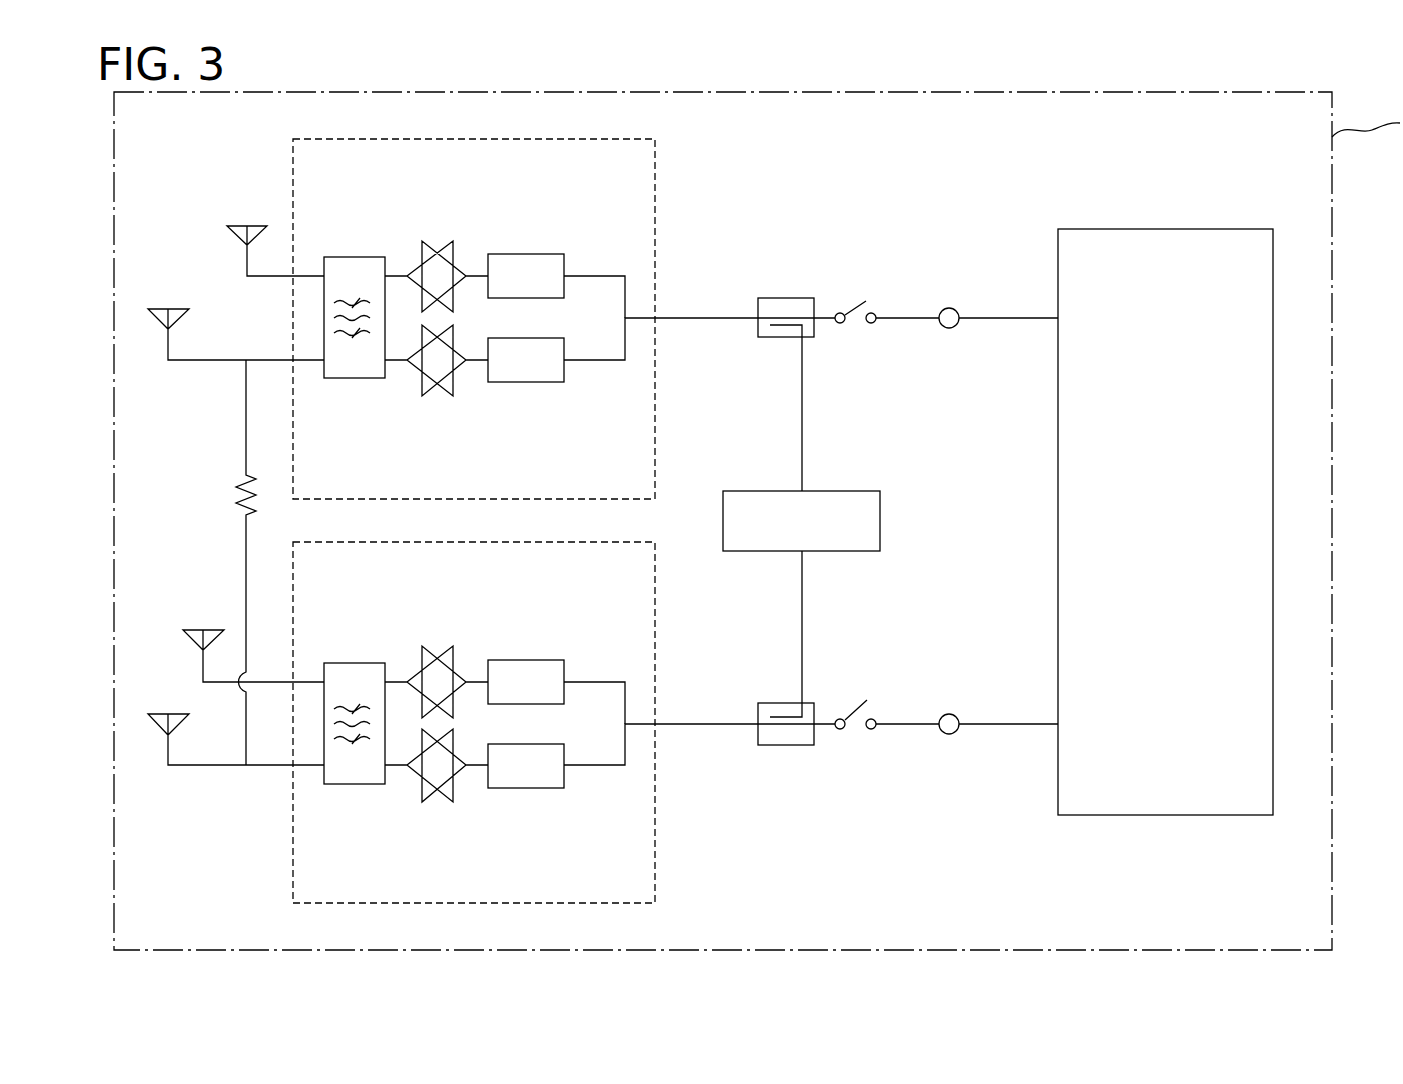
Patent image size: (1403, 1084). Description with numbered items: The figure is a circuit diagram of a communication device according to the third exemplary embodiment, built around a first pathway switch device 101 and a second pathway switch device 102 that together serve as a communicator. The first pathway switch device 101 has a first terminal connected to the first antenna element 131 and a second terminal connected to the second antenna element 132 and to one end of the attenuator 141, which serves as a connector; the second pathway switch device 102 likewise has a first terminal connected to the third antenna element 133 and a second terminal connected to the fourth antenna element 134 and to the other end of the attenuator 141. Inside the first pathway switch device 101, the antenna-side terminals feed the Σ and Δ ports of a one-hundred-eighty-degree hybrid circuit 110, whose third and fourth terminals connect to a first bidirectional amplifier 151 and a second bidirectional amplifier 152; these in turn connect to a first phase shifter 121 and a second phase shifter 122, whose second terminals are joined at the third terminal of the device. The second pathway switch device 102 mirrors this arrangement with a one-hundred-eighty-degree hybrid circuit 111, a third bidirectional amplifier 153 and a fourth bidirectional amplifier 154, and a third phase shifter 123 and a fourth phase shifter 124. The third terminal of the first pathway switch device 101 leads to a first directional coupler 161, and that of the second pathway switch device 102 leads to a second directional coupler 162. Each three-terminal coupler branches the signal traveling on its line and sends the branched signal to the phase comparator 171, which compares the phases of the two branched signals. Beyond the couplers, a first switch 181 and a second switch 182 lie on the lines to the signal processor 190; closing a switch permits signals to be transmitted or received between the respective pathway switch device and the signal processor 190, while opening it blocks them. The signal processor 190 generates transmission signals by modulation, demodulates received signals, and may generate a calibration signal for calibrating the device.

The first pathway switch device 101 is at (657, 164).
The second pathway switch device 102 is at (657, 864).
The 180-degree hybrid circuit 110 is at (375, 240).
The 180-degree hybrid circuit 111 is at (356, 663).
The first phase shifter 121 is at (523, 254).
The second phase shifter 122 is at (523, 382).
The third phase shifter 123 is at (523, 660).
The fourth phase shifter 124 is at (522, 788).
The first antenna element 131 is at (247, 226).
The second antenna element 132 is at (168, 309).
The third antenna element 133 is at (200, 630).
The fourth antenna element 134 is at (163, 714).
The attenuator 141 is at (246, 477).
The first bidirectional amplifier 151 is at (427, 242).
The second bidirectional amplifier 152 is at (428, 397).
The third bidirectional amplifier 153 is at (427, 647).
The fourth bidirectional amplifier 154 is at (428, 802).
The first directional coupler 161 is at (788, 298).
The second directional coupler 162 is at (788, 745).
The phase comparator 171 is at (830, 490).
The first switch 181 is at (853, 308).
The second switch 182 is at (855, 734).
The signal processor 190 is at (1165, 229).